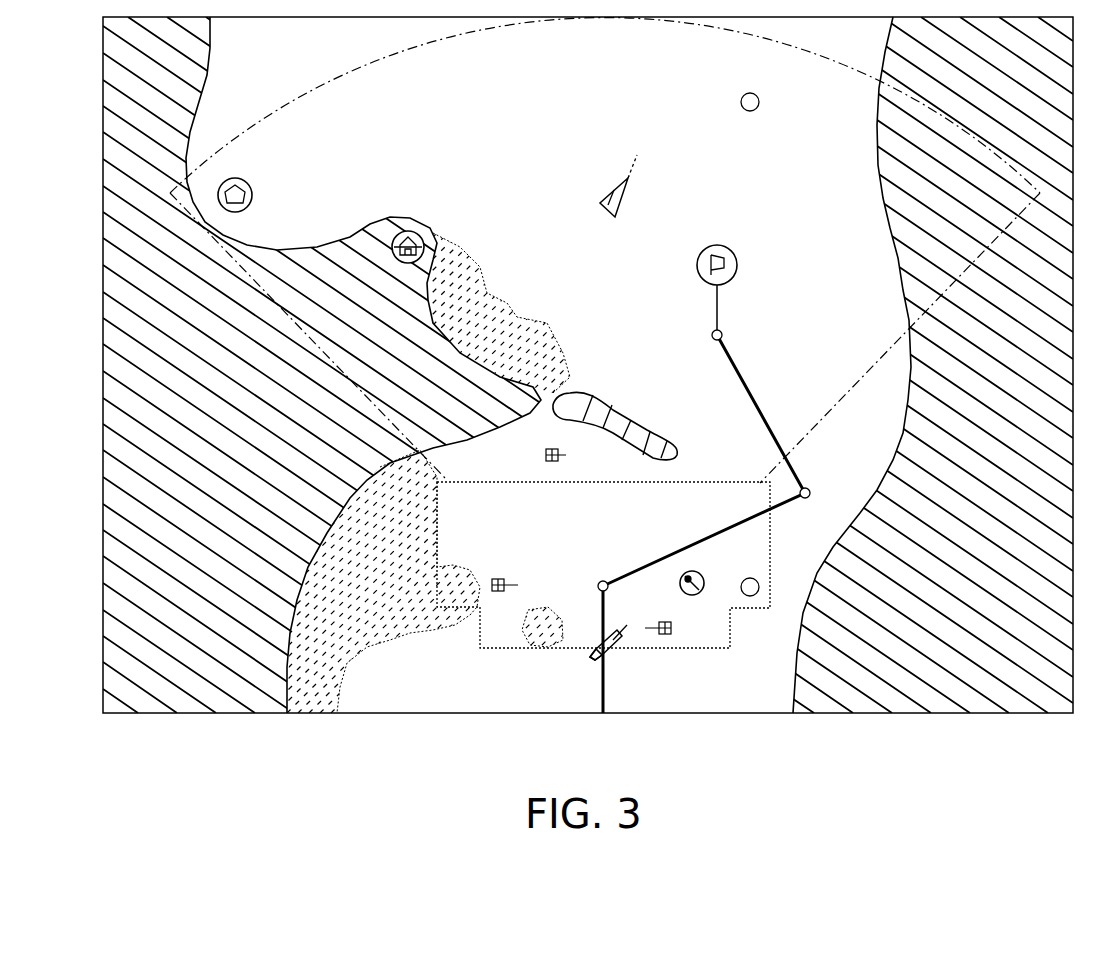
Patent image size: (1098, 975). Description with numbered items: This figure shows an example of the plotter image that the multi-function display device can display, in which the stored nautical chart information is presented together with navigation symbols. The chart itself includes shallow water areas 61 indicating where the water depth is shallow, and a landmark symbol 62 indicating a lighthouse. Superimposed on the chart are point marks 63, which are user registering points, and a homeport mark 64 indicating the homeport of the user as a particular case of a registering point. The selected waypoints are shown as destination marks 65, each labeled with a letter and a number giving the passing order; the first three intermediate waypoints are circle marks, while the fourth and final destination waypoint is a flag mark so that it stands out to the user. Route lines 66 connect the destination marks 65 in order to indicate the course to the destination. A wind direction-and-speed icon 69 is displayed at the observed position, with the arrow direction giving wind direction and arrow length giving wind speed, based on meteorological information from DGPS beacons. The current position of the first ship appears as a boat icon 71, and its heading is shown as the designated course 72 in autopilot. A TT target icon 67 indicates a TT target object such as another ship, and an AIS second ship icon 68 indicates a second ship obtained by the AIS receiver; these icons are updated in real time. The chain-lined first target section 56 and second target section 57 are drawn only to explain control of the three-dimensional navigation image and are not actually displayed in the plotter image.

The first target section 56 is at (478, 642).
The second target section 57 is at (327, 83).
The shallow water area 61 is at (507, 303).
The landmark symbol 62 is at (407, 230).
The point mark 63 is at (753, 111).
The homeport mark 64 is at (253, 187).
The destination mark 65 is at (738, 265).
The route line 66 is at (695, 542).
The TT target icon 67 is at (537, 452).
The AIS second ship icon 68 is at (618, 212).
The wind direction-and-speed icon 69 is at (680, 590).
The boat icon 71 is at (590, 657).
The designated course 72 is at (632, 640).